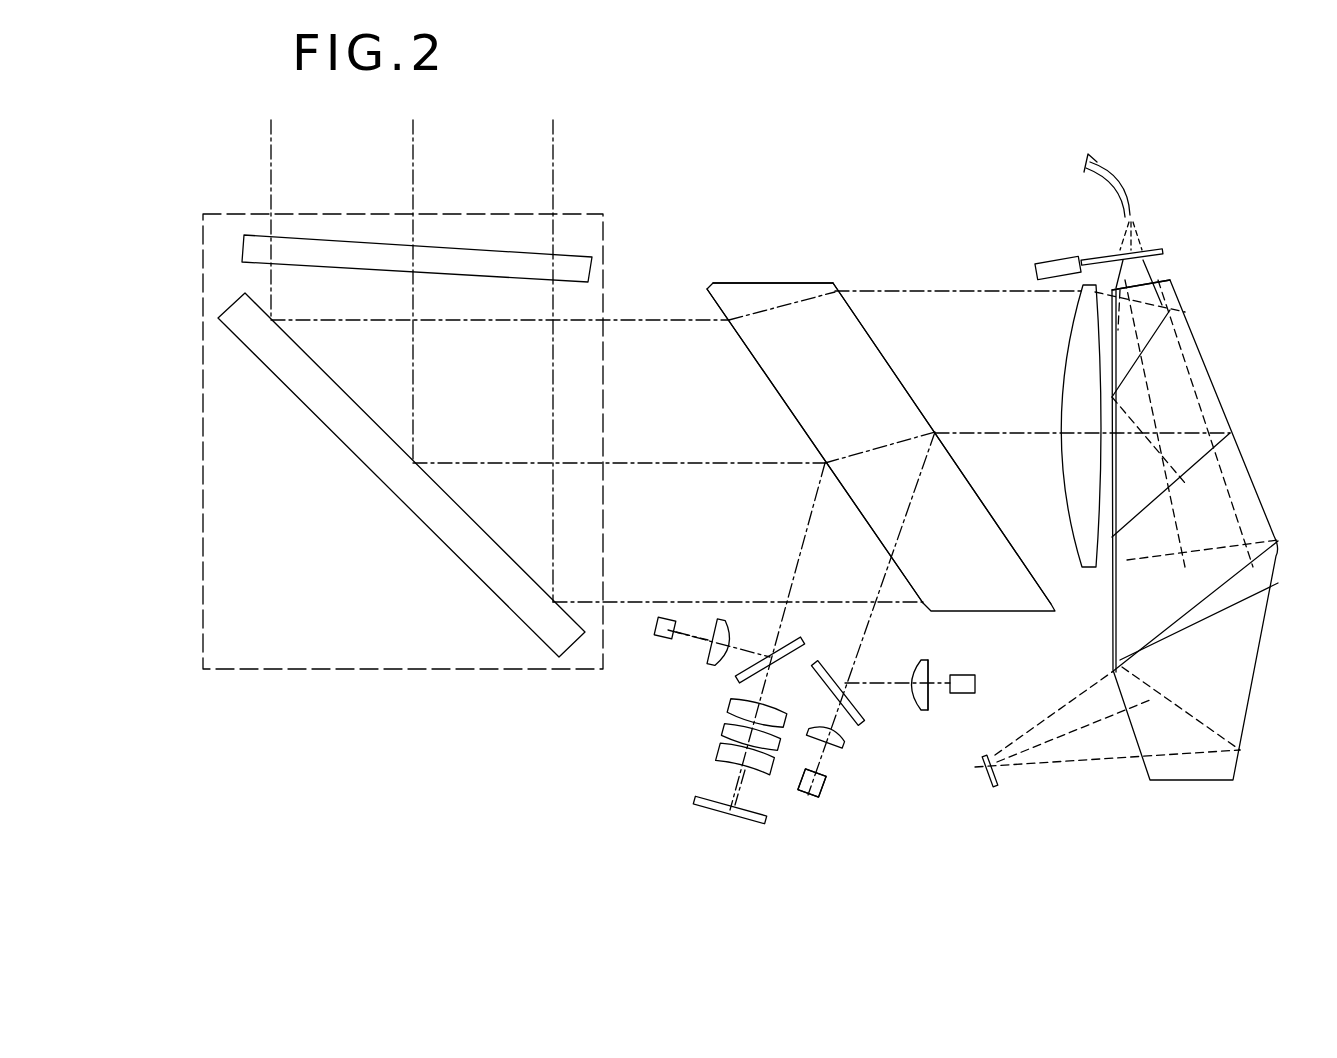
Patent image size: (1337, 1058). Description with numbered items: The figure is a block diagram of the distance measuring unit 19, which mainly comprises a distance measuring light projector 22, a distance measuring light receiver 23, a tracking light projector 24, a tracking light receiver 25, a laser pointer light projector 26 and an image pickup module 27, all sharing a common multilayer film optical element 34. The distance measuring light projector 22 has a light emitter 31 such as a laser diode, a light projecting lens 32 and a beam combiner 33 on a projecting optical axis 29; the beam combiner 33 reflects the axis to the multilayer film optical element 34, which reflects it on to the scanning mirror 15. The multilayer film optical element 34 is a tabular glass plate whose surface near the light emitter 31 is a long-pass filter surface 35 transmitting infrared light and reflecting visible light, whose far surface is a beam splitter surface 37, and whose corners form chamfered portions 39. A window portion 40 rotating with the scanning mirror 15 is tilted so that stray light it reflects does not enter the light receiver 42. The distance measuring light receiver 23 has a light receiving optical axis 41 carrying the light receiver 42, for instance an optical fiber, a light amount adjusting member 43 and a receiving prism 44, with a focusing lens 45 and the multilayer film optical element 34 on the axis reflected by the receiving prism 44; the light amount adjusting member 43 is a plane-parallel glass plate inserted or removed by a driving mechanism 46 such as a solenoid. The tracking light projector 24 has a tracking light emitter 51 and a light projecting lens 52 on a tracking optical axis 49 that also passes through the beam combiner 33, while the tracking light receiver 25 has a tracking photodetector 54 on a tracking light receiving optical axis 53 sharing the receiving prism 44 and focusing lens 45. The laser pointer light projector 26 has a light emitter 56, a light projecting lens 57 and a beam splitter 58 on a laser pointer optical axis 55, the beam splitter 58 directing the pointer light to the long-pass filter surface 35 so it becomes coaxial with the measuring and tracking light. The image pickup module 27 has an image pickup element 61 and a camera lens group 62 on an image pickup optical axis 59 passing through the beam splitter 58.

The scanning mirror 15 is at (355, 457).
The window portion 40 is at (502, 278).
The beam splitter surface 37 is at (893, 363).
The chamfered portions 39 is at (777, 282).
The long-pass filter surface 35 is at (747, 355).
The multilayer film optical element 34 is at (967, 477).
The focusing lens 45 is at (1063, 355).
The receiving prism 44 is at (1212, 385).
The light receiving optical axis 41 is at (1143, 270).
The light amount adjusting member 43 is at (1152, 250).
The driving mechanism 46 is at (1052, 258).
The light receiver 42 is at (1117, 173).
The distance measuring unit 19 is at (1046, 143).
The distance measuring light receiver 23 is at (1149, 190).
The laser pointer light projector 26 is at (702, 592).
The light emitter 56 is at (662, 618).
The laser pointer optical axis 55 is at (682, 638).
The light projecting lens 57 is at (725, 623).
The beam splitter 58 is at (783, 637).
The beam combiner 33 is at (843, 693).
The distance measuring light projector 22 is at (988, 665).
The projecting optical axis 29 is at (940, 681).
The light projecting lens 32 is at (925, 713).
The light emitter 31 is at (960, 697).
The camera lens group 62 is at (726, 730).
The image pickup optical axis 59 is at (737, 787).
The image pickup element 61 is at (720, 812).
The image pickup module 27 is at (733, 828).
The light projecting lens 52 is at (843, 745).
The tracking optical axis 49 is at (820, 762).
The tracking light emitter 51 is at (812, 797).
The tracking light projector 24 is at (842, 812).
The tracking photodetector 54 is at (997, 760).
The tracking light receiving optical axis 53 is at (1078, 745).
The tracking light receiver 25 is at (1027, 780).